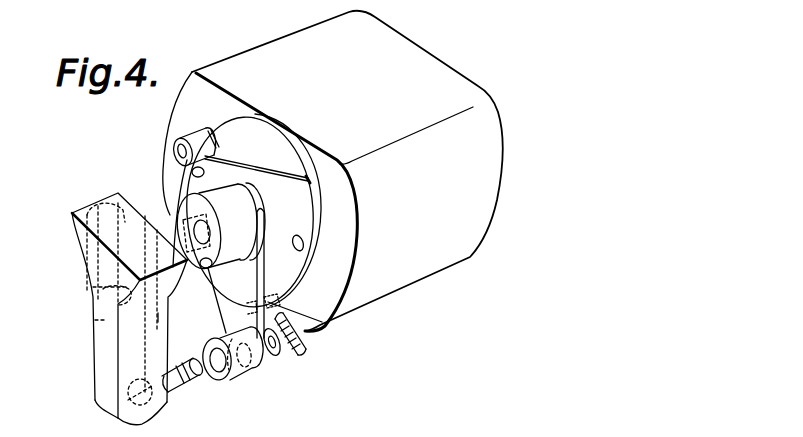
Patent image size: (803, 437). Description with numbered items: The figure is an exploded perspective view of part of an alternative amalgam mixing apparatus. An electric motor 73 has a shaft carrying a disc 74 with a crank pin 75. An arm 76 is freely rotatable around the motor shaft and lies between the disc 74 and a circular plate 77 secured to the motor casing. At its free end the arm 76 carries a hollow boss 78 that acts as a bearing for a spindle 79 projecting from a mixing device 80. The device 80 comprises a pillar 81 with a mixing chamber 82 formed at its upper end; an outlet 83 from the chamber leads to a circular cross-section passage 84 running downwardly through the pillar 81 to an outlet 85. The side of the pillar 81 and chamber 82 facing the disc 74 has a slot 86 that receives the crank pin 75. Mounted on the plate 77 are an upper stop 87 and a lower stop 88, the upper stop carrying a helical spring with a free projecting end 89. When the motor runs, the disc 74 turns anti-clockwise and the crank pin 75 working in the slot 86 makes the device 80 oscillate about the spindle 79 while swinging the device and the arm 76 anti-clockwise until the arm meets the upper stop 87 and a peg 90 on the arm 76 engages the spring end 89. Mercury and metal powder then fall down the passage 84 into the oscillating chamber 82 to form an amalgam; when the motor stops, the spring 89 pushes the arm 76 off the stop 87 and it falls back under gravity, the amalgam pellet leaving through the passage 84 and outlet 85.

The electric motor 73 is at (453, 80).
The disc 74 is at (177, 217).
The crank pin 75 is at (222, 274).
The arm 76 is at (283, 348).
The circular plate 77 is at (267, 150).
The hollow boss 78 is at (246, 370).
The spindle 79 is at (192, 383).
The mixing device 80 is at (83, 262).
The pillar 81 is at (133, 355).
The mixing chamber 82 is at (93, 210).
The outlet 83 is at (107, 296).
The passage 84 is at (105, 333).
The outlet 85 is at (102, 410).
The slot 86 is at (155, 317).
The upper stop 87 is at (187, 137).
The lower stop 88 is at (188, 258).
The free projecting end of helical spring 89 is at (288, 173).
The peg 90 is at (322, 322).